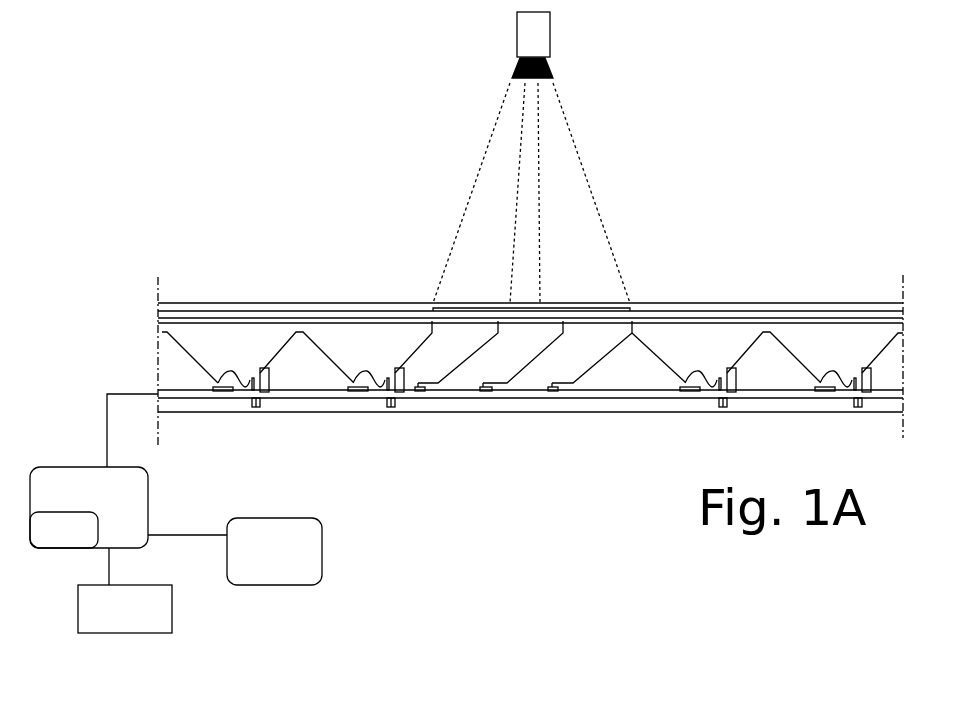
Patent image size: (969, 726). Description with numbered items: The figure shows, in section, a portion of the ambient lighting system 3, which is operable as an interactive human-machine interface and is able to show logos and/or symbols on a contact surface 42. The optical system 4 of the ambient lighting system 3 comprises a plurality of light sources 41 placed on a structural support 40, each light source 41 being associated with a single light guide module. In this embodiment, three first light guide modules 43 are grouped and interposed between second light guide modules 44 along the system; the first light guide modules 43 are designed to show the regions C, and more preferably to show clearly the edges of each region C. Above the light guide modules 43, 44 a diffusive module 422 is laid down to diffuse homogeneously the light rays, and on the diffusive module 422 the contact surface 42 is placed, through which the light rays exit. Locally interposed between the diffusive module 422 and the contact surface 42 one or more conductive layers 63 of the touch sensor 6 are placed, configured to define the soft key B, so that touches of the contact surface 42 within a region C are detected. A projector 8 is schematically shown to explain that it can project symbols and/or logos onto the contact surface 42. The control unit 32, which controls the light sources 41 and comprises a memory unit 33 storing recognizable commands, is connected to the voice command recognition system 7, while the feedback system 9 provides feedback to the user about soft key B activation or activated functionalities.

The ambient lighting system 3 is at (132, 282).
The optical system 4 is at (122, 342).
The touch sensor 6 is at (547, 273).
The voice command recognition system 7 is at (137, 583).
The projector 8 is at (537, 30).
The feedback system 9 is at (275, 567).
The control unit 32 is at (128, 526).
The memory unit 33 is at (64, 530).
The structural support 40 is at (187, 392).
The light sources 41 is at (357, 395).
The contact surface 42 is at (212, 303).
The first light guide modules 43 is at (517, 331).
The second light guide modules 44 is at (197, 348).
The conductive layer 63 is at (536, 311).
The diffusive module 422 is at (168, 318).
The soft key B is at (516, 290).
The region C is at (477, 255).